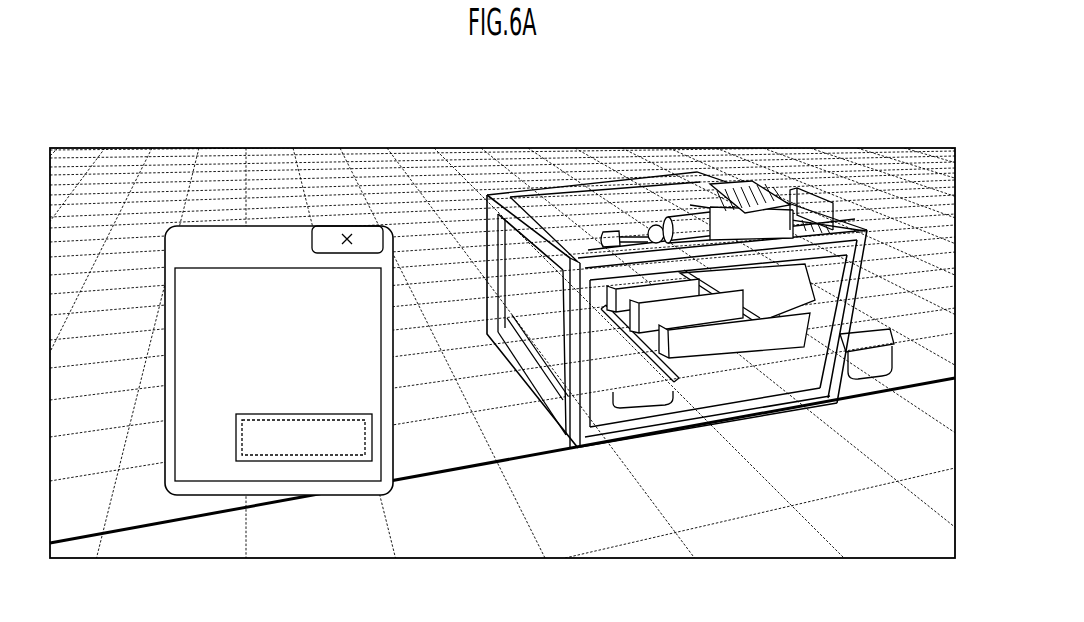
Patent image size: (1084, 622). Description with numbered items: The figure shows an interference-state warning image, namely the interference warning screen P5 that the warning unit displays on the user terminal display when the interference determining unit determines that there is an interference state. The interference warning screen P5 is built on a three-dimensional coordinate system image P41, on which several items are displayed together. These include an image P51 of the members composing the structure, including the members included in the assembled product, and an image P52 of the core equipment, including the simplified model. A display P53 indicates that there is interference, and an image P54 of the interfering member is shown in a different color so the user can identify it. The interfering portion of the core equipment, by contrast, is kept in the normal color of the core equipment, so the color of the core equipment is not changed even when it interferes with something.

The interference warning screen P5 is at (867, 134).
The three-dimensional coordinate system image P41 is at (330, 183).
The display indicating that there is interference P53 is at (278, 226).
The image of the members composing the structure P51 is at (663, 183).
The image of the core equipment P52 is at (884, 358).
The image of an interfering member P54 is at (737, 183).